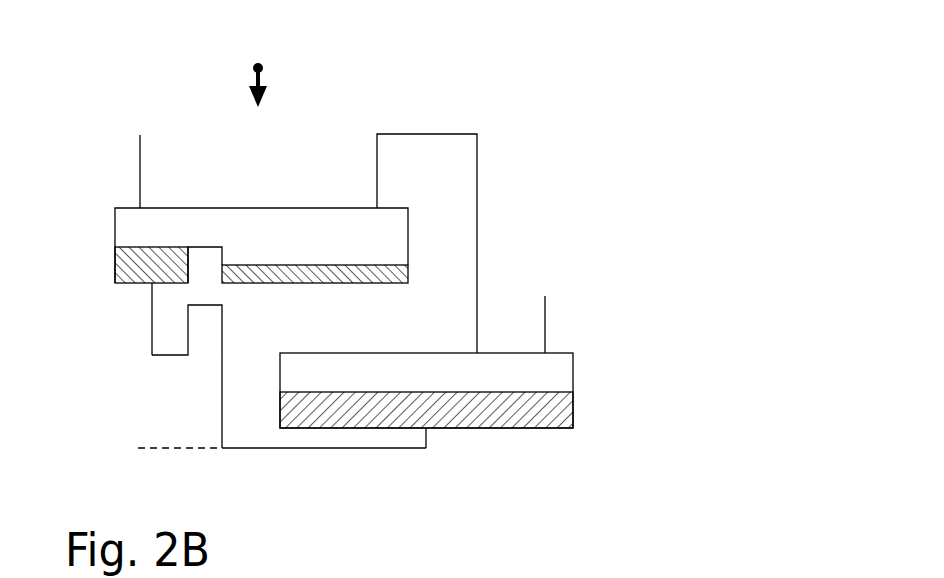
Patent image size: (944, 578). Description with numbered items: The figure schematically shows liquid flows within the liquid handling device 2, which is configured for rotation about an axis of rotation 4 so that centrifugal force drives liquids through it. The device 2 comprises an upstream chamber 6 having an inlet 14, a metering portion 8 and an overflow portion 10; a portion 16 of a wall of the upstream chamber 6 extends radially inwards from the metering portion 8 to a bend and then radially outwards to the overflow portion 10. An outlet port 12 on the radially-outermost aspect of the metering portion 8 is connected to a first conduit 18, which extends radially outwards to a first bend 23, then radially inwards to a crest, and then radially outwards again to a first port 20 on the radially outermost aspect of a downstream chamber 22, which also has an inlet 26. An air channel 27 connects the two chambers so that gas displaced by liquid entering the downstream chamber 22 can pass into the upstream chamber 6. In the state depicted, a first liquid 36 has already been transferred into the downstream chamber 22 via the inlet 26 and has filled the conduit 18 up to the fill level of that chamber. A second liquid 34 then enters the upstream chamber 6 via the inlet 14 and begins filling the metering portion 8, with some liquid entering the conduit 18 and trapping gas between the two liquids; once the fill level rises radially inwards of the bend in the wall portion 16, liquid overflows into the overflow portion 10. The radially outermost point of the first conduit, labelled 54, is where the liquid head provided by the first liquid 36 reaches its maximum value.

The liquid handling device 2 is at (554, 76).
The axis of rotation 4 is at (263, 63).
The upstream chamber 6 is at (115, 231).
The metering portion 8 is at (103, 285).
The overflow portion 10 is at (398, 287).
The outlet port 12 is at (147, 287).
The inlet 14 is at (141, 173).
The portion of a wall 16 is at (201, 250).
The first conduit 18 is at (275, 448).
The first port 20 is at (438, 435).
The downstream chamber 22 is at (573, 375).
The first bend 23 is at (154, 365).
The inlet 26 is at (545, 316).
The air channel 27 is at (478, 187).
The second liquid 34 is at (115, 261).
The first liquid 36 is at (563, 418).
The radially outermost point of the first conduit 54 is at (160, 448).